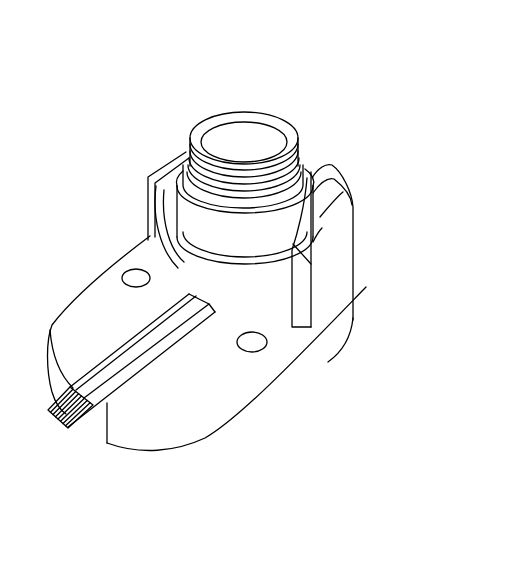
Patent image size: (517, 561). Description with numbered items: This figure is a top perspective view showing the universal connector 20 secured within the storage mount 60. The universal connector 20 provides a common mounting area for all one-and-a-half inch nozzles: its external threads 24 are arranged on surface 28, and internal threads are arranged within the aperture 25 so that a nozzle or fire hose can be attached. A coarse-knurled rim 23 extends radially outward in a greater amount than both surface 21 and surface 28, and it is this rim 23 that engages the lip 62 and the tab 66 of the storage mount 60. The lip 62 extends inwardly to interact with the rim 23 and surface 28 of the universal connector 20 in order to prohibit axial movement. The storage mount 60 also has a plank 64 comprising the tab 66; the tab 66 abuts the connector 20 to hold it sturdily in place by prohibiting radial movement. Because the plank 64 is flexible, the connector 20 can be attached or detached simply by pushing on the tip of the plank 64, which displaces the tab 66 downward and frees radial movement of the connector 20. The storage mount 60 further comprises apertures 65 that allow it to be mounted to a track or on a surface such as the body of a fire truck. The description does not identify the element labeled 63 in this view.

The universal connector 20 is at (312, 123).
The surface 21 is at (240, 300).
The rim 23 is at (257, 341).
The external threads 24 is at (265, 112).
The aperture 25 is at (228, 148).
The surface 28 is at (292, 216).
The storage mount 60 is at (237, 83).
The lip 62 is at (146, 183).
The base front face 63 is at (158, 392).
The plank 64 is at (50, 417).
The apertures 65 is at (140, 279).
The tab 66 is at (199, 302).